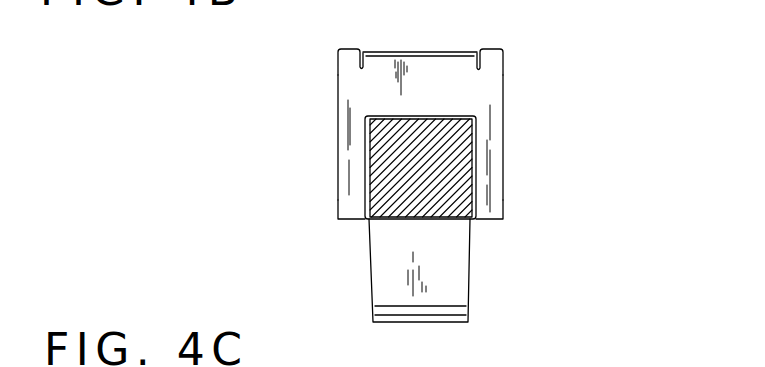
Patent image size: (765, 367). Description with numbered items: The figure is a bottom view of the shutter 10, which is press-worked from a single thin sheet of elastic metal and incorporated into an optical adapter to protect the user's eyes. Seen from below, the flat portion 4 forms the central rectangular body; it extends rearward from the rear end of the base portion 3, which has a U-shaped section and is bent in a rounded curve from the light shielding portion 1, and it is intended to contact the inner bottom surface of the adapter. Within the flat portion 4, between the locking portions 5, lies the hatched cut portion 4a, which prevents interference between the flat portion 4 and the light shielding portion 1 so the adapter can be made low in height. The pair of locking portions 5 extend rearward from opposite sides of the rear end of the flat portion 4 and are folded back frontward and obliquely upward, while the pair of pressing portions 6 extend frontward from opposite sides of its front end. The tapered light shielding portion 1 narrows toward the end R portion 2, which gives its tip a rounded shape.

The light shielding portion 1 is at (470, 262).
The end R portion 2 is at (601, 359).
The base portion 3 is at (430, 52).
The flat portion 4 is at (503, 130).
The cut portion 4a is at (407, 198).
The locking portions 5 is at (338, 203).
The pressing portions 6 is at (338, 62).
The shutter 10 is at (521, 175).